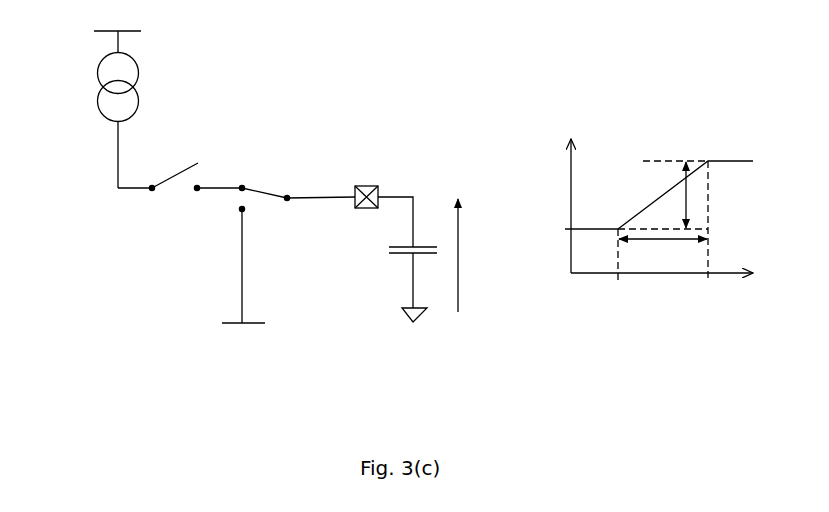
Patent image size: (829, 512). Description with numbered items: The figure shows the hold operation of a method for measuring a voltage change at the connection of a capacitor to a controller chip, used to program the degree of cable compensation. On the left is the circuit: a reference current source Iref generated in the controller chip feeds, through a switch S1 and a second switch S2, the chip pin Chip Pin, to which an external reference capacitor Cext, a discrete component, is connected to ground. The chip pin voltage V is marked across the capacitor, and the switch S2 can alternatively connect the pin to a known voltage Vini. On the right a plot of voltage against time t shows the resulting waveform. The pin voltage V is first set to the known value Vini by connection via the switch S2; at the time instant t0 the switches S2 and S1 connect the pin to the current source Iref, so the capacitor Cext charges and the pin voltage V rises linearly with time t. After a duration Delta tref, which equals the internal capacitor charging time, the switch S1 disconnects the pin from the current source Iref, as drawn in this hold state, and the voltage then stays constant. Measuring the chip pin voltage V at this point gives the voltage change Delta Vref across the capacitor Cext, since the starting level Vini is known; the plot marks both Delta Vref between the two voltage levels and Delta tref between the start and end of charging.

The reference current source Iref is at (89, 65).
The switch S1 is at (180, 166).
The switch S2 is at (297, 237).
The known initial voltage Vini is at (391, 270).
The chip pin Chip Pin is at (376, 178).
The external reference capacitor Cext is at (381, 278).
The chip pin voltage V is at (519, 209).
The time t is at (662, 292).
The time instant t0 is at (618, 270).
The voltage change Delta Vref is at (678, 197).
The internal capacitor charging time Delta tref is at (663, 247).